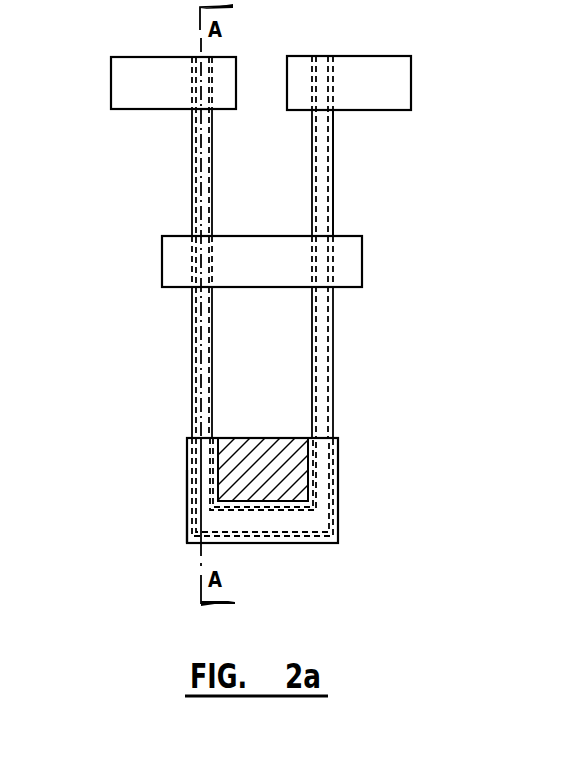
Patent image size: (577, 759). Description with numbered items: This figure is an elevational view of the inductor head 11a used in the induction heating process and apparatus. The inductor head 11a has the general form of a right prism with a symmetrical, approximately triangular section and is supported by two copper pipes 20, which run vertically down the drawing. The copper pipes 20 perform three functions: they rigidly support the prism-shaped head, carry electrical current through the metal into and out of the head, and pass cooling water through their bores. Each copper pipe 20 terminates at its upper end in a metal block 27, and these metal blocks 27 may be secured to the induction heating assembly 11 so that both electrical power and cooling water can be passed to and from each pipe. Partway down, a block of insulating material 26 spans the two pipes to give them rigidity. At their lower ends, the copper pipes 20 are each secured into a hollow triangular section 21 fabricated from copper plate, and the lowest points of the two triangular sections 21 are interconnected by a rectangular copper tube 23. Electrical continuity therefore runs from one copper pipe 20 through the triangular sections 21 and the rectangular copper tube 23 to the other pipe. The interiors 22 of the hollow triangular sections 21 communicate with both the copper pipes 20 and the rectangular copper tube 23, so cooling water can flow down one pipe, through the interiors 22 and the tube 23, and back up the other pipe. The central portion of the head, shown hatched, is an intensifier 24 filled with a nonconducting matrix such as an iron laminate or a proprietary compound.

The induction heating assembly 11 is at (346, 177).
The inductor head 11a is at (186, 503).
The copper pipes 20 is at (212, 367).
The hollow triangular section 21 is at (338, 452).
The interiors of hollow triangular sections 22 is at (334, 481).
The rectangular copper tube 23 is at (302, 520).
The intensifier 24 is at (285, 495).
The block of insulating material 26 is at (355, 257).
The metal block 27 is at (400, 86).